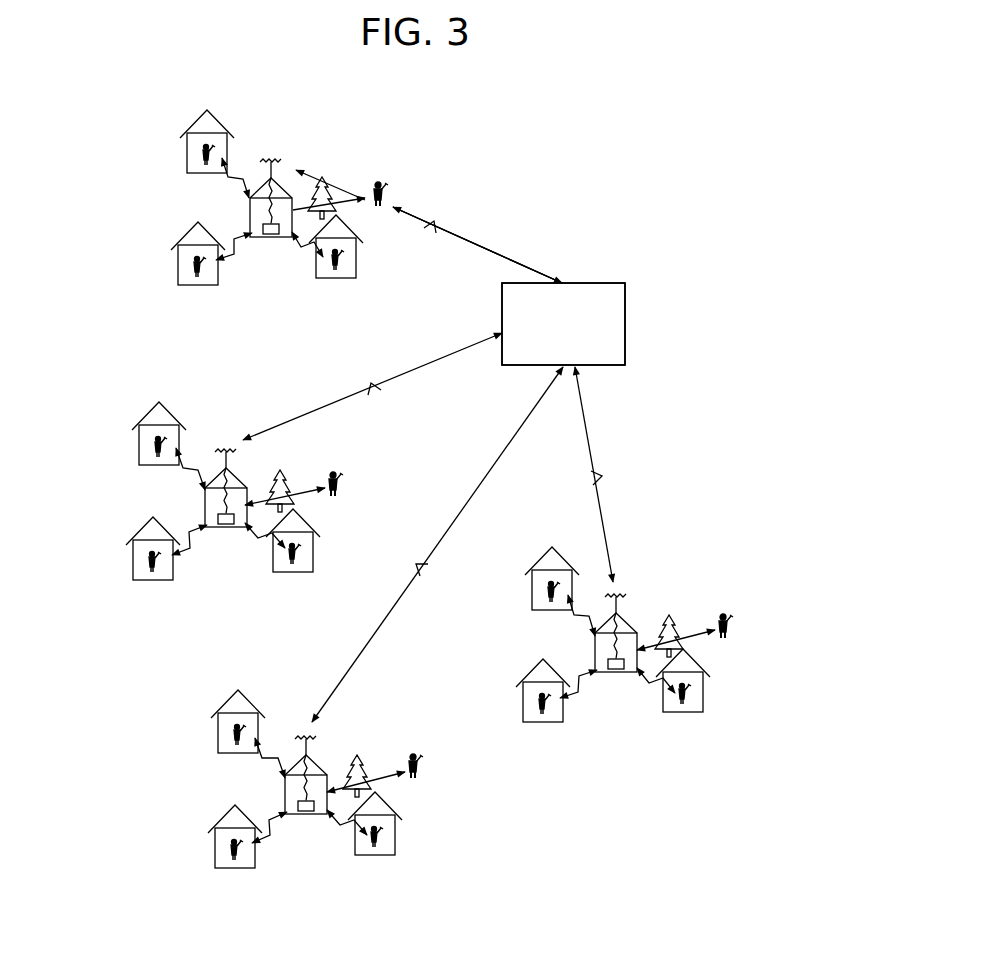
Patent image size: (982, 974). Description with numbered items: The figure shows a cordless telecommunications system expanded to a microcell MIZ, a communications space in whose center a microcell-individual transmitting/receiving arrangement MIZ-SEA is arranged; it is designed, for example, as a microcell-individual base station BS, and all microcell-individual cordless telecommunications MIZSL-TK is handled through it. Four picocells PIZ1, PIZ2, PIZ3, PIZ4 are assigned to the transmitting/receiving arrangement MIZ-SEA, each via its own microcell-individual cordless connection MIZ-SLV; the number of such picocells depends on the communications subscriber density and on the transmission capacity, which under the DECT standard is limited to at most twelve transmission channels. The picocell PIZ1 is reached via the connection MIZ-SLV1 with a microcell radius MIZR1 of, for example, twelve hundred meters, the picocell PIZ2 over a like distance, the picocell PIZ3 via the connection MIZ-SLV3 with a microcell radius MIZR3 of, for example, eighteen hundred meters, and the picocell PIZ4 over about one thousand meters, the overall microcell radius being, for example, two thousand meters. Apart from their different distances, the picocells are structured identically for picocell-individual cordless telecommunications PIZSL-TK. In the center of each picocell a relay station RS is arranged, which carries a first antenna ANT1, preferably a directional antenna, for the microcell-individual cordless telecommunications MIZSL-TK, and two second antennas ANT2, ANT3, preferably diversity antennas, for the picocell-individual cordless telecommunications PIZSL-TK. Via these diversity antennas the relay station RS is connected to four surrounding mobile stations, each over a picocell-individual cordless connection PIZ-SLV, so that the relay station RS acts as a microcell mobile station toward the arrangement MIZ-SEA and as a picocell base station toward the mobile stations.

The picocell PIZ1 is at (267, 235).
The relay station RS is at (250, 217).
The first antenna ANT1 is at (276, 162).
The second antenna ANT2 is at (258, 200).
The second antenna ANT3 is at (330, 167).
The picocell-individual cordless connection PIZ-SLV is at (288, 237).
The picocell-individual cordless telecommunications PIZSL-TK is at (348, 192).
The base station BS is at (592, 283).
The microcell-individual transmitting/receiving arrangement MIZ-SEA is at (613, 293).
The microcell MIZ is at (648, 340).
The microcell radius MIZR1 is at (490, 232).
The microcell-individual cordless telecommunications MIZSL-TK is at (398, 207).
The microcell-individual cordless connection MIZ-SLV is at (433, 230).
The microcell-individual cordless connection MIZ-SLV1 is at (358, 381).
The microcell-individual cordless connection MIZ-SLV3 is at (508, 457).
The microcell radius MIZR3 is at (603, 532).
The picocell PIZ2 is at (221, 562).
The picocell PIZ3 is at (402, 830).
The picocell PIZ4 is at (672, 578).